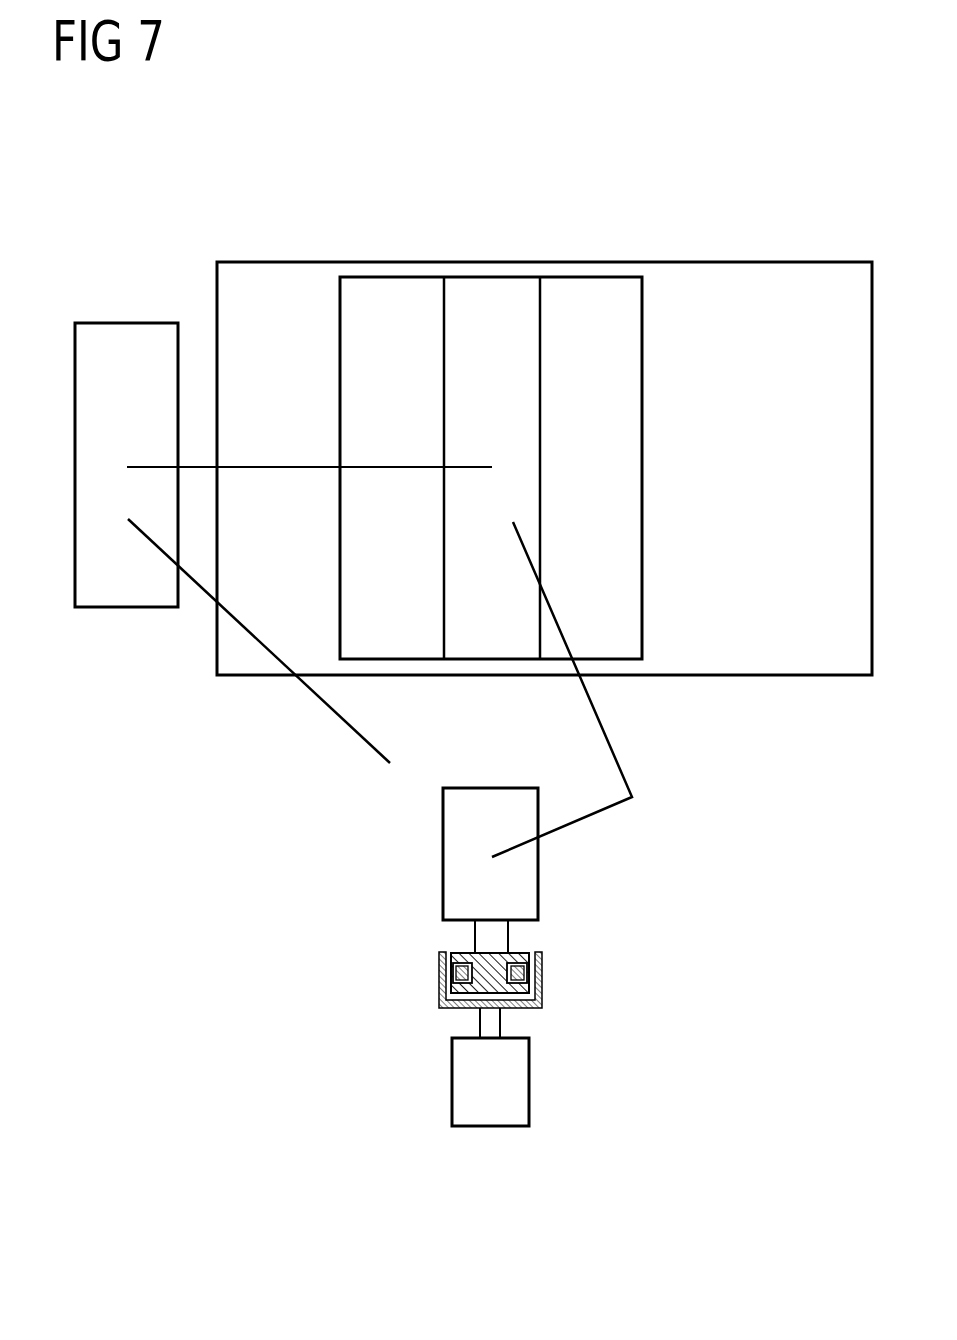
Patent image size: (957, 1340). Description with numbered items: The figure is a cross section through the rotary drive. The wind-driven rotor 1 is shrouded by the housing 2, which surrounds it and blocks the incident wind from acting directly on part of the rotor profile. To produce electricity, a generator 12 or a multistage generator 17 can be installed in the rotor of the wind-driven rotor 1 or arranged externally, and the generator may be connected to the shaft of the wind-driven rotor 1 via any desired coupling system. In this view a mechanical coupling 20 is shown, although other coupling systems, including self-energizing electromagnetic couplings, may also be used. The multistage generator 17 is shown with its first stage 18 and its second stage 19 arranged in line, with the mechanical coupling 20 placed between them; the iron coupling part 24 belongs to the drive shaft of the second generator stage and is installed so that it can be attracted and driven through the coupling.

The wind-driven rotor 1 is at (495, 305).
The housing 2 is at (728, 307).
The generator 12 is at (121, 357).
The multistage generator 17 is at (443, 872).
The first stage 18 is at (522, 885).
The second stage 19 is at (517, 1098).
The mechanical coupling 20 is at (543, 979).
The iron coupling part 24 is at (440, 978).